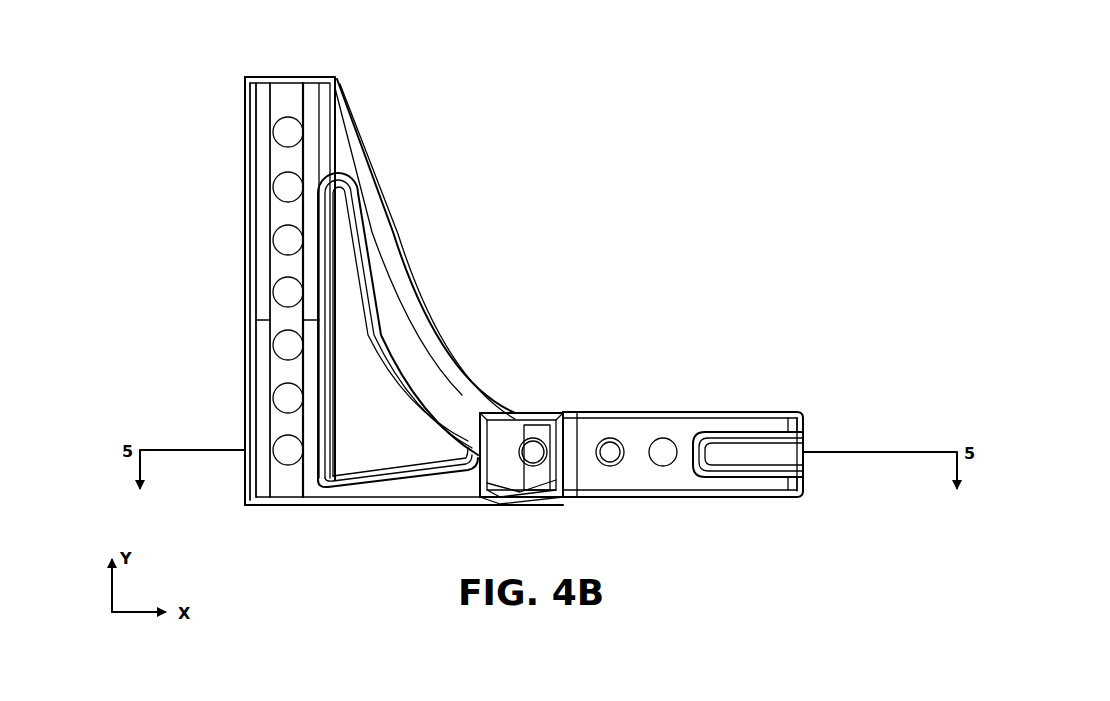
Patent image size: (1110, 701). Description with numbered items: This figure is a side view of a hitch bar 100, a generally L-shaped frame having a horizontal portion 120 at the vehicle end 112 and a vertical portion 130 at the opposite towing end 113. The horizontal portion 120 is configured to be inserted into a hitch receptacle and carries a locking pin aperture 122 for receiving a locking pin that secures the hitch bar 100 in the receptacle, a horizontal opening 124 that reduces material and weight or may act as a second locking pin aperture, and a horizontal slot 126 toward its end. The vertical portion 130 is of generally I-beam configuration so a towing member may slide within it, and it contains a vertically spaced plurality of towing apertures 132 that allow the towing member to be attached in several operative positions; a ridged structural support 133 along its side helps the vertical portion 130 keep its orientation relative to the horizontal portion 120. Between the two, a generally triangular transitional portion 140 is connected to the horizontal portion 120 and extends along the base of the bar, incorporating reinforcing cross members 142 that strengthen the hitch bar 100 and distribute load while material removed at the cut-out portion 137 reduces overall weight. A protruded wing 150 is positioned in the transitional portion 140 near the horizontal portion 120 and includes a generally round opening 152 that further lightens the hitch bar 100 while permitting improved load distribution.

The hitch bar 100 is at (198, 52).
The vertical portion 130 is at (286, 77).
The towing end 113 is at (243, 186).
The towing apertures 132 is at (292, 240).
The structural support 133 is at (258, 375).
The transitional portion 140 is at (395, 235).
The cut-out portion 137 is at (363, 343).
The reinforcing cross members 142 is at (415, 360).
The wing 150 is at (505, 437).
The opening 152 is at (546, 452).
The horizontal portion 120 is at (732, 412).
The vehicle end 112 is at (803, 437).
The horizontal slot 126 is at (772, 452).
The locking pin aperture 122 is at (664, 468).
The horizontal opening 124 is at (602, 460).